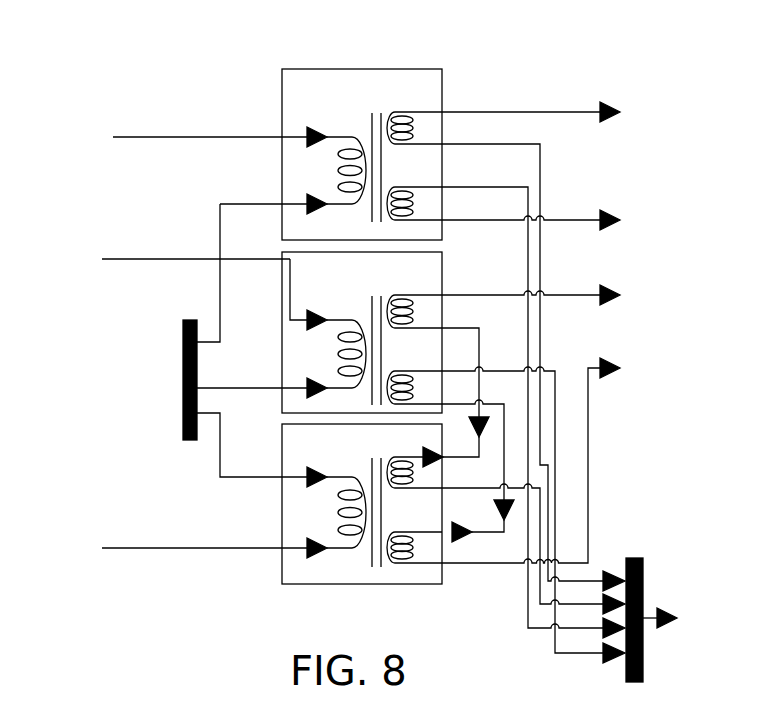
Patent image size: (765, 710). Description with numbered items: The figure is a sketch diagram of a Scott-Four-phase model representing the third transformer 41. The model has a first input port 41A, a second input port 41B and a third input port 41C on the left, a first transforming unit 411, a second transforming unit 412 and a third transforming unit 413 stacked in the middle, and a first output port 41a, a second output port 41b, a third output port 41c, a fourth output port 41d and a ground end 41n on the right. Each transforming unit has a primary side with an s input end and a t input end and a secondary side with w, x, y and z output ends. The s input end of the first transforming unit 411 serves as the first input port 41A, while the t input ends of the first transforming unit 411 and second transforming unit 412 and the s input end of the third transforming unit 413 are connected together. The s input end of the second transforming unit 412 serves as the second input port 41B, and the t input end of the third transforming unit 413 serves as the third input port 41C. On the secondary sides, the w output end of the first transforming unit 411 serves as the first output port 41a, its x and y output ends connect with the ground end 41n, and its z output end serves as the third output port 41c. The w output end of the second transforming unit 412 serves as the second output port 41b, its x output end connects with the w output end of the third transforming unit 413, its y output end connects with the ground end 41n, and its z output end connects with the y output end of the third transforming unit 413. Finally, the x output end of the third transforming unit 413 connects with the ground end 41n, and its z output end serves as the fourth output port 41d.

The third transformer 41 is at (221, 92).
The first transforming unit 411 is at (413, 68).
The second transforming unit 412 is at (283, 288).
The third transforming unit 413 is at (283, 568).
The first input port 41A is at (134, 137).
The second input port 41B is at (122, 259).
The third input port 41C is at (117, 548).
The first output port 41a is at (585, 112).
The second output port 41b is at (585, 220).
The third output port 41c is at (583, 295).
The fourth output port 41d is at (593, 365).
The ground end 41n is at (648, 613).